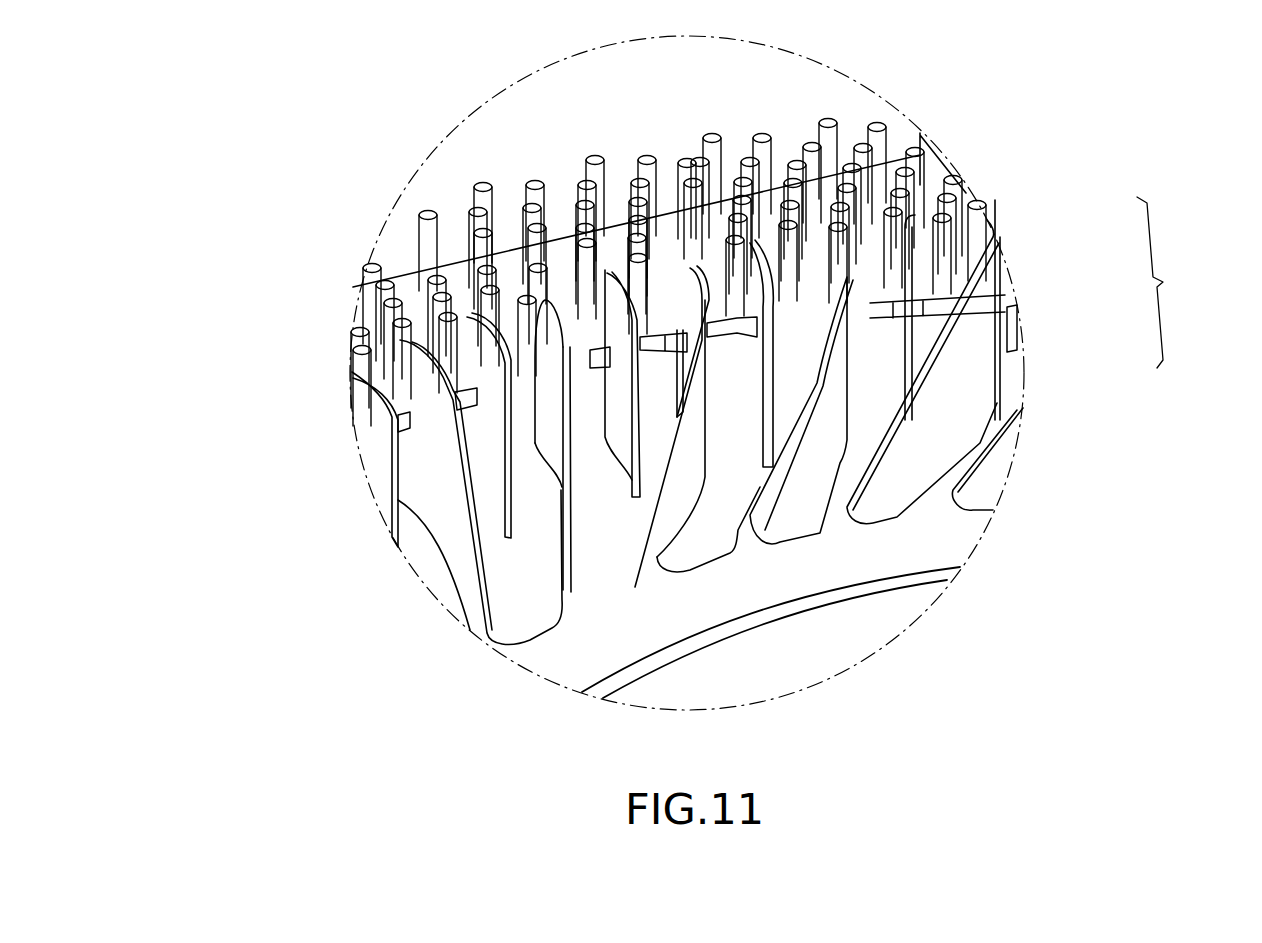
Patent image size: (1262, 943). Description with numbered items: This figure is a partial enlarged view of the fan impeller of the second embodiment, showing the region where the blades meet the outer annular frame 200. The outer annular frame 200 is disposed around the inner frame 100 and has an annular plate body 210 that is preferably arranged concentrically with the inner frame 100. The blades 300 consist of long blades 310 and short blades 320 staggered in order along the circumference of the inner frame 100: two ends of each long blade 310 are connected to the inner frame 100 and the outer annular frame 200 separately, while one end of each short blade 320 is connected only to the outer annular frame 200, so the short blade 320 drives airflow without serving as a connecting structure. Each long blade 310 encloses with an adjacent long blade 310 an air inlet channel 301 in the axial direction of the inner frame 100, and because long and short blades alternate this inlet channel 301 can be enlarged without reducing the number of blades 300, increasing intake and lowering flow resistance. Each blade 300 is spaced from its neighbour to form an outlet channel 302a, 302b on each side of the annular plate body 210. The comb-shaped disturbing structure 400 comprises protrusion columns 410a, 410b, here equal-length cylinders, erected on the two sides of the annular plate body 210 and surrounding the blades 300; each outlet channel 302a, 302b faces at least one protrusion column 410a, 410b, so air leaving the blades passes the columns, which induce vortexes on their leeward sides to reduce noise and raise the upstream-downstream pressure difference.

The inner frame 100 is at (770, 583).
The outer annular frame 200 is at (556, 216).
The annular plate body 210 is at (510, 253).
The blades 300 is at (288, 147).
The air inlet channel 301 is at (508, 572).
The outlet channel 302a is at (547, 312).
The outlet channel 302b is at (527, 475).
The long blade 310 is at (427, 380).
The short blade 320 is at (490, 307).
The disturbing structure 400 is at (1179, 282).
The protrusion column 410a is at (885, 240).
The protrusion column 410b is at (893, 350).